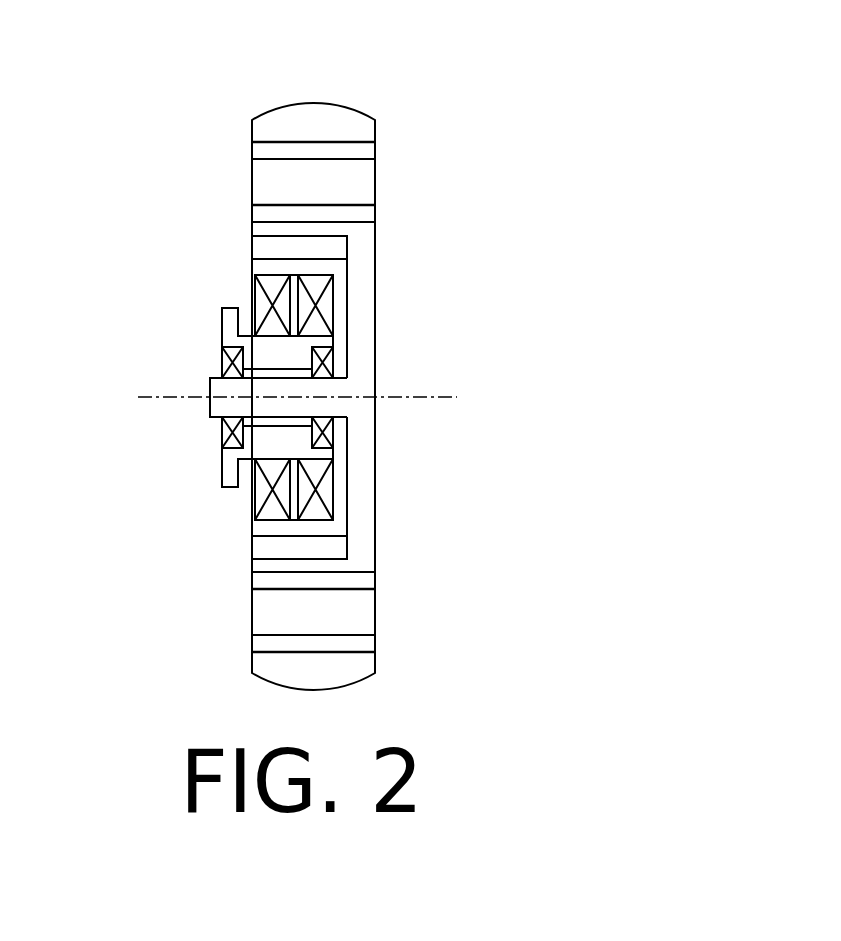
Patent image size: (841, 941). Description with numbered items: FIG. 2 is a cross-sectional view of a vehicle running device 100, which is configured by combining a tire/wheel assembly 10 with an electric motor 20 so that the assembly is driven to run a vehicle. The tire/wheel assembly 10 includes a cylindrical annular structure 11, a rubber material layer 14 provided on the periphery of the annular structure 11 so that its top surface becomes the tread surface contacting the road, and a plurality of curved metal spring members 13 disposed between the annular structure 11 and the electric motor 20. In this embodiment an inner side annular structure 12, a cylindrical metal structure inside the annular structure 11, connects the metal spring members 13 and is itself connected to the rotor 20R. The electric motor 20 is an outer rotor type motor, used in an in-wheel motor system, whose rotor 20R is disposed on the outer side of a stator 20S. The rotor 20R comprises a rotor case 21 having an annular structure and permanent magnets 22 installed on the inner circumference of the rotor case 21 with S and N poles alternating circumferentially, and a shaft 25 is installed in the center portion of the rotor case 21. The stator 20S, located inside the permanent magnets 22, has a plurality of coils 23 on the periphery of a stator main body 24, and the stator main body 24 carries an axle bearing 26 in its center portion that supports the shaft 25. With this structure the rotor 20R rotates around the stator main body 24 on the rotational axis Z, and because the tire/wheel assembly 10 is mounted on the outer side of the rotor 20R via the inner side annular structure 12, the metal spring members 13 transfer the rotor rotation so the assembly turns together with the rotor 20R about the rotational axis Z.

The vehicle running device 100 is at (489, 97).
The tire/wheel assembly 10 is at (460, 103).
The rubber material layer 14 is at (375, 120).
The annular structure 11 is at (375, 151).
The metal spring members 13 is at (375, 187).
The inner side annular structure 12 is at (375, 216).
The electric motor 20 is at (140, 193).
The rotor 20R is at (140, 537).
The stator 20S is at (140, 453).
The rotor case 21 is at (252, 230).
The permanent magnets 22 is at (252, 247).
The coils 23 is at (257, 299).
The stator main body 24 is at (222, 325).
The shaft 25 is at (210, 405).
The axle bearing 26 is at (222, 362).
The rotational axis Z is at (468, 398).